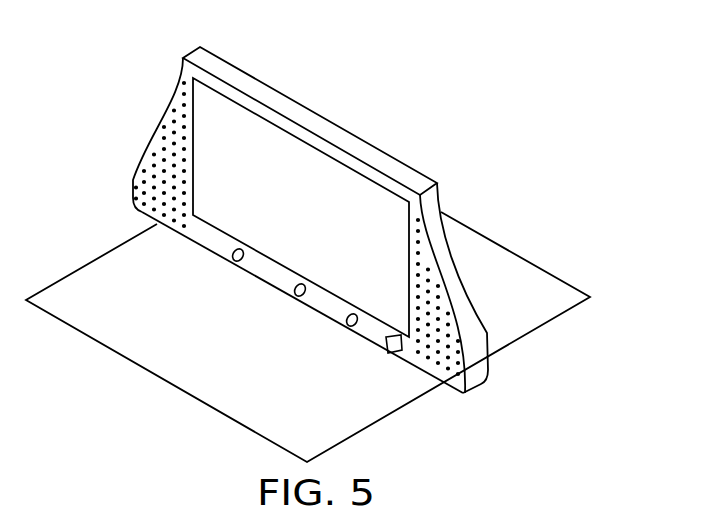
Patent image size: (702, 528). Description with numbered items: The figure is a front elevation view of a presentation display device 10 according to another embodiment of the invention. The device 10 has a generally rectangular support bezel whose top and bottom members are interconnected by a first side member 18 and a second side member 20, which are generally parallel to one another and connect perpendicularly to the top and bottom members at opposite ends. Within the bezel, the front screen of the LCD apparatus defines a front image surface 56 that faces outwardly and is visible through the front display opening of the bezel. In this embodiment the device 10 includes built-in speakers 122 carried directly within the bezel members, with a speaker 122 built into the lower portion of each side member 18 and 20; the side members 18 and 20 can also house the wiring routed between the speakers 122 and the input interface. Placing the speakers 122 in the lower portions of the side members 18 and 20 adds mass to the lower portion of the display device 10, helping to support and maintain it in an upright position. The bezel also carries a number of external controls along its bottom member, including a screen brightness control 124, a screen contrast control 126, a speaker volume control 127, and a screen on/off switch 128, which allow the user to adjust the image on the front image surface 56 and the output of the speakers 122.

The presentation display device 10 is at (298, 250).
The first side member 18 is at (158, 128).
The second side member 20 is at (465, 262).
The front image surface 56 is at (313, 216).
The speaker 122 is at (150, 173).
The screen brightness control 124 is at (233, 254).
The screen contrast control 126 is at (295, 288).
The speaker volume control 127 is at (347, 318).
The screen on/off switch 128 is at (387, 343).